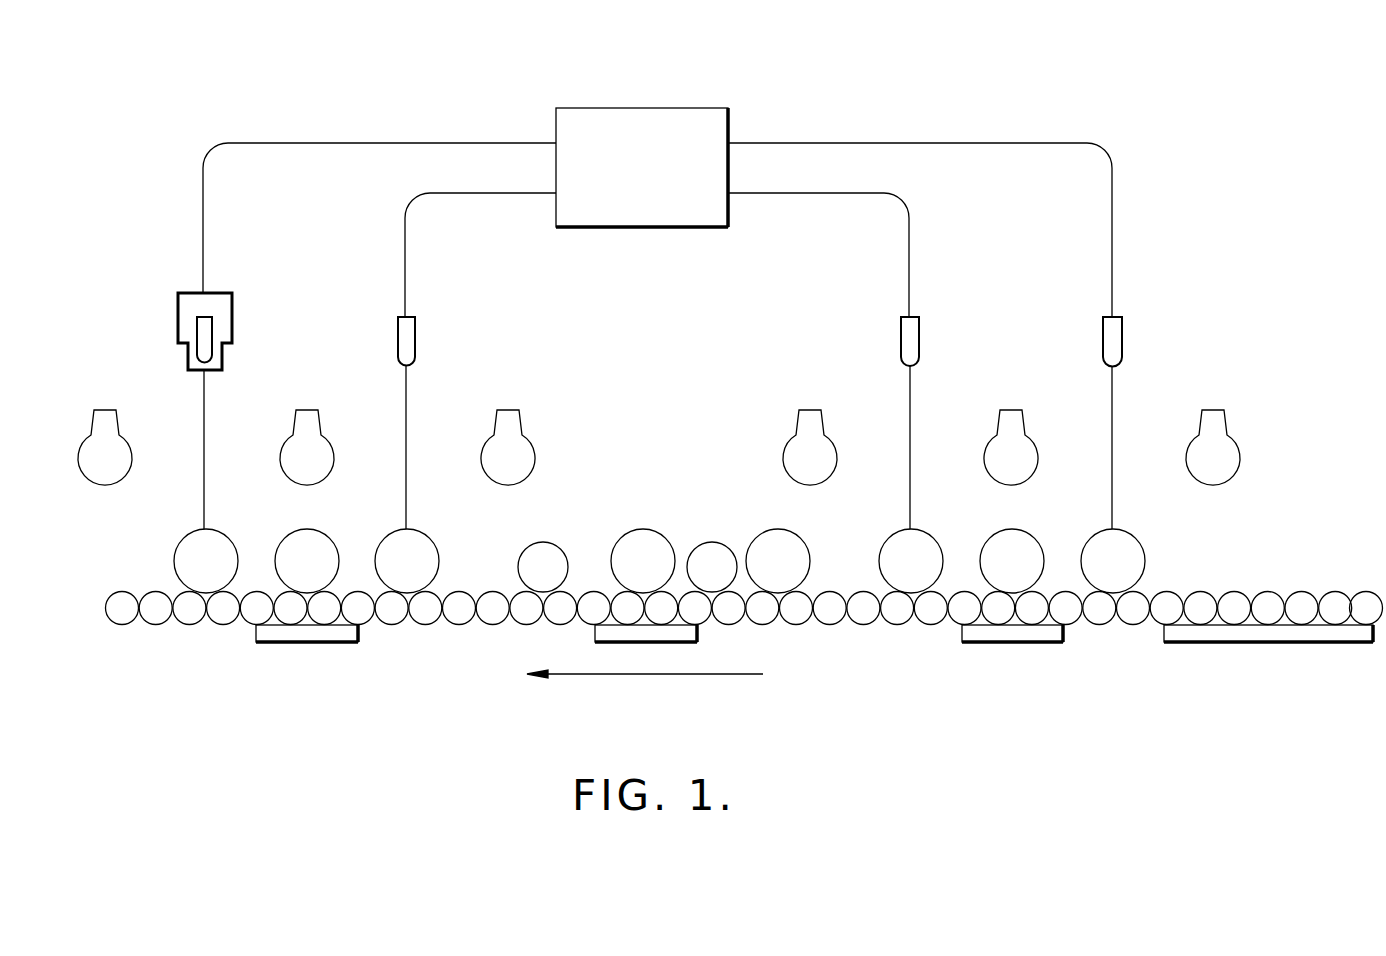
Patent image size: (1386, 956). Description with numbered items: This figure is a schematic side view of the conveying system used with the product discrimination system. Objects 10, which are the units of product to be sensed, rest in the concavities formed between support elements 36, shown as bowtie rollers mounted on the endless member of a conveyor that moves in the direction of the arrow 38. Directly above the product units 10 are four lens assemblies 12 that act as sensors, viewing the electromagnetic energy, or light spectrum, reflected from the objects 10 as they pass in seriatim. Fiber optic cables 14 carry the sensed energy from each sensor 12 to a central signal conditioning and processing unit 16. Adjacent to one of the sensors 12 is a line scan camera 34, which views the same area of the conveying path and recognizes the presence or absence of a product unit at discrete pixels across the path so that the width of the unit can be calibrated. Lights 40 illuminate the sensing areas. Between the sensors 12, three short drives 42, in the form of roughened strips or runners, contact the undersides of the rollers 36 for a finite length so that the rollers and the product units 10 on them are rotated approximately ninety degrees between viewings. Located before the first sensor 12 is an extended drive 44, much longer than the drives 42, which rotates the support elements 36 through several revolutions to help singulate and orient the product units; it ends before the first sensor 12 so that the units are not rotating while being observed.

The objects 10 is at (1147, 552).
The lens assemblies 12 is at (183, 325).
The fiber optic cables 14 is at (437, 141).
The signal conditioning and processing unit 16 is at (728, 130).
The line scan camera 34 is at (218, 293).
The support elements 36 is at (900, 624).
The arrow 38 is at (583, 677).
The lights 40 is at (788, 448).
The drives 42 is at (315, 645).
The extended drive 44 is at (1252, 624).